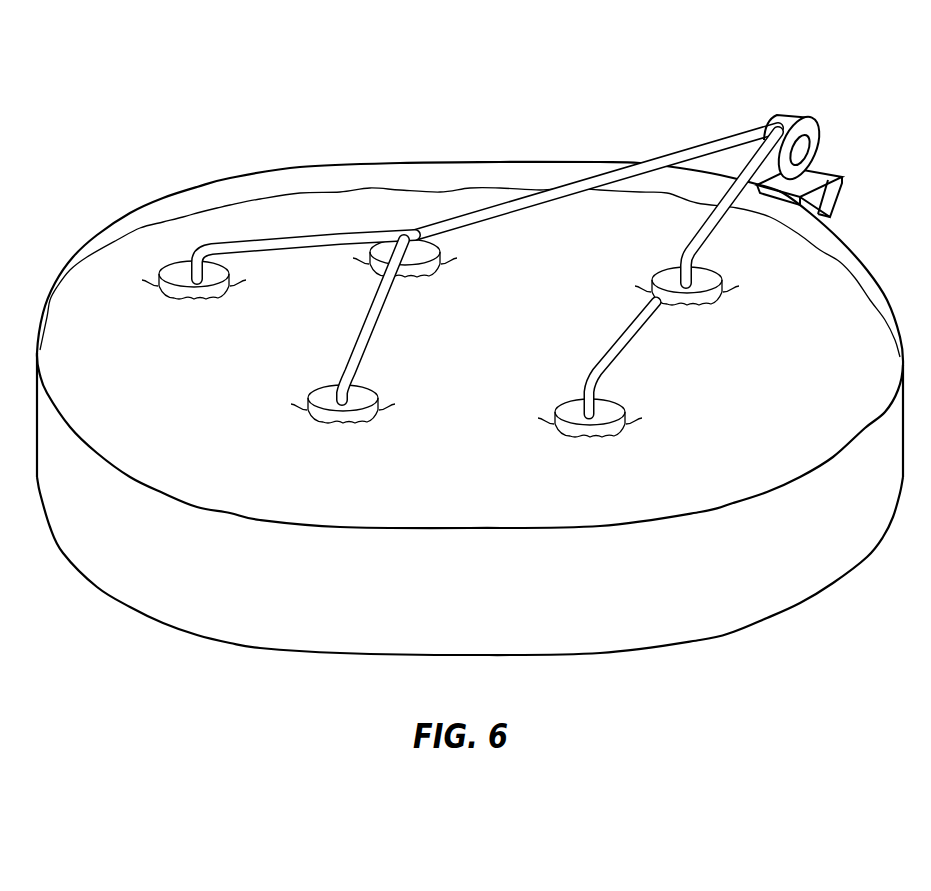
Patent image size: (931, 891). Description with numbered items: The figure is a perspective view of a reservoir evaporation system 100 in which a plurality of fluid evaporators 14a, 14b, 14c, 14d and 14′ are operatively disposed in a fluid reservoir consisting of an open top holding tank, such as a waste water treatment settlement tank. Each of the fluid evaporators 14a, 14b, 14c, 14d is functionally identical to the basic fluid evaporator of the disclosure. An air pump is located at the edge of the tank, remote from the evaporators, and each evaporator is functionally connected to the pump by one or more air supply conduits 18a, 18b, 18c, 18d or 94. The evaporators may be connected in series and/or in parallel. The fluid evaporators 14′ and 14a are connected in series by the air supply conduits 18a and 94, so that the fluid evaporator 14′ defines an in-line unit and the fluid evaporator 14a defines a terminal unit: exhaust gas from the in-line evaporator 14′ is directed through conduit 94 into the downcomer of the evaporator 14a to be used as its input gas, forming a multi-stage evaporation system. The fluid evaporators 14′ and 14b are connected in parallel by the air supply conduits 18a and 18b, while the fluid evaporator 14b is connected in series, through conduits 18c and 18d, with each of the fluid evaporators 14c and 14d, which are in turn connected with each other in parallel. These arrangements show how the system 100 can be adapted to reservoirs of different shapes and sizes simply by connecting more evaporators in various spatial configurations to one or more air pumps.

The reservoir evaporation system 100 is at (455, 128).
The fluid evaporator 14a is at (610, 436).
The fluid evaporator 14b is at (424, 271).
The fluid evaporator 14c is at (363, 420).
The fluid evaporator 14d is at (195, 298).
The fluid evaporator 14′ is at (707, 303).
The air supply conduit 18a is at (703, 233).
The air supply conduit 18b is at (577, 183).
The air supply conduit 18c is at (368, 318).
The air supply conduit 18d is at (297, 248).
The air supply conduit 94 is at (626, 358).